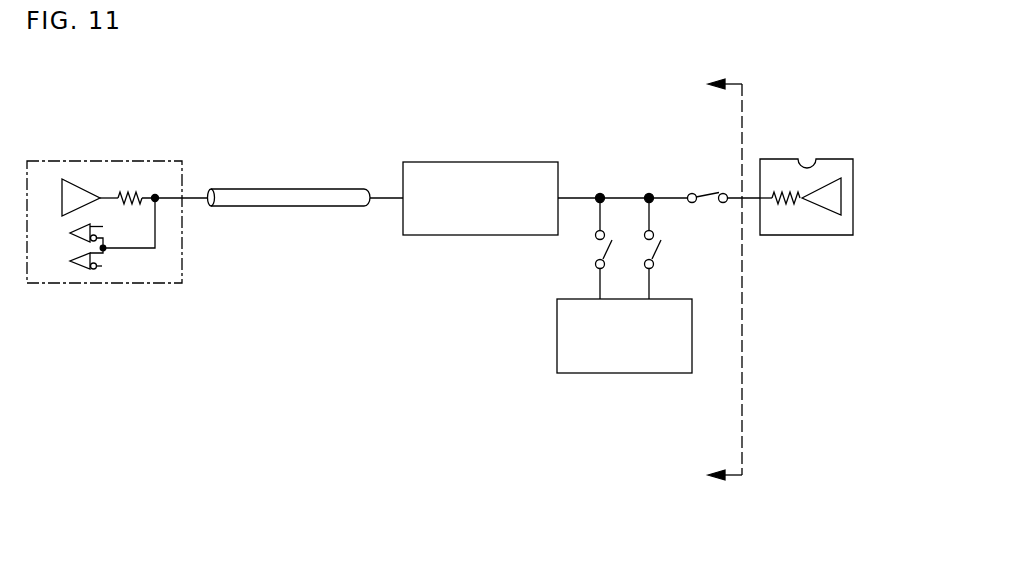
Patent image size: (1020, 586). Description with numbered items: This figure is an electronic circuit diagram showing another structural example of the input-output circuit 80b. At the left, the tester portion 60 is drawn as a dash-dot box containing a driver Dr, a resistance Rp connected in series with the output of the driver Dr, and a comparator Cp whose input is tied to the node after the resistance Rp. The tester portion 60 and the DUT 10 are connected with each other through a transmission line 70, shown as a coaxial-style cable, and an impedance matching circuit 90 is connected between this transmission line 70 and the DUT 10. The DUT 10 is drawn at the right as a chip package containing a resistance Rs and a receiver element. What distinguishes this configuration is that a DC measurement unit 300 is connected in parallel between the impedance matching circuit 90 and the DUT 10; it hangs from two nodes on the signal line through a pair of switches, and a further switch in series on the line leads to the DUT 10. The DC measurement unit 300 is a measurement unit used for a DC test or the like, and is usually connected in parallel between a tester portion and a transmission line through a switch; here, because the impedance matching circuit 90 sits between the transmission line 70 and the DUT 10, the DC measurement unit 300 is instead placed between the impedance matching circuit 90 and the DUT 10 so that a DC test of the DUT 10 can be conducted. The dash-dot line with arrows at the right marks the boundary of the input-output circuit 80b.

The DUT 10 is at (806, 222).
The tester portion 60 is at (104, 246).
The transmission line 70 is at (282, 206).
The impedance matching circuit 90 is at (478, 235).
The DC measurement unit 300 is at (557, 335).
The input-output circuit 80b is at (607, 283).
The driver Dr is at (68, 197).
The resistance Rp is at (130, 184).
The comparator Cp is at (76, 246).
The device-side resistor Rs is at (786, 187).